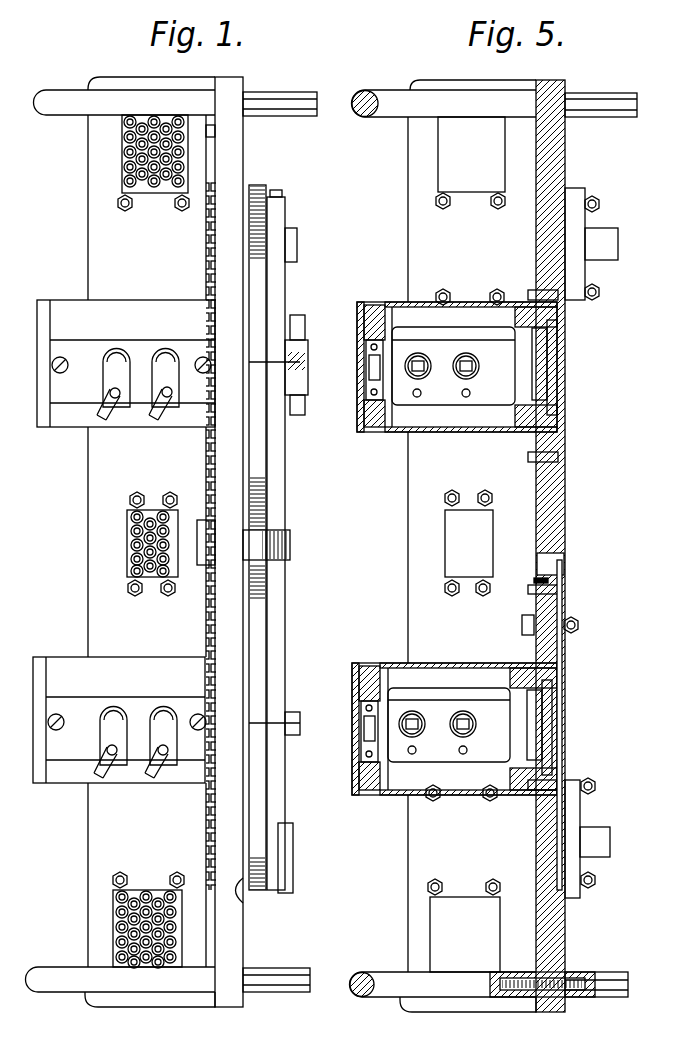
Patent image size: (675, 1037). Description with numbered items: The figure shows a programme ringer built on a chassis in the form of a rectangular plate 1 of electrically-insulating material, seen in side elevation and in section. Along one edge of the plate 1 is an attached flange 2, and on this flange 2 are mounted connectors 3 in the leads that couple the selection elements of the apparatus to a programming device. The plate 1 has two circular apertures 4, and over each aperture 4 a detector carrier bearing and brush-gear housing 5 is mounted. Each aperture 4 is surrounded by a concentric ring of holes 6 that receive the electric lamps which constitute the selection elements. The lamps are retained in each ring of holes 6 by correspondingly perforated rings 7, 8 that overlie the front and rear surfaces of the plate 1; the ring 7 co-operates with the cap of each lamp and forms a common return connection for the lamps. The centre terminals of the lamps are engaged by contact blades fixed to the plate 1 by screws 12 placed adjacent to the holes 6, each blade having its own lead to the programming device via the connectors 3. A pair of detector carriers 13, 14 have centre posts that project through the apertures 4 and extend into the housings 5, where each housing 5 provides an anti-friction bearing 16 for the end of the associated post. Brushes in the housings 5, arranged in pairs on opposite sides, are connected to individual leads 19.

In FIG. 1, the rectangular plate 1 is at (227, 967).
In FIG. 5, the rectangular plate 1 is at (552, 937).
In FIG. 1, the flange 2 is at (93, 861).
In FIG. 5, the flange 2 is at (407, 924).
In FIG. 1, the connectors 3 is at (122, 160).
In FIG. 5, the circular apertures 4 is at (552, 383).
In FIG. 5, the detector carrier bearing and brush-gear housings 5 is at (390, 428).
In FIG. 5, the holes 6 is at (558, 563).
In FIG. 5, the perforated ring 7 is at (535, 573).
In FIG. 1, the perforated ring 8 is at (235, 892).
In FIG. 5, the perforated ring 8 is at (563, 583).
In FIG. 1, the screws 12 is at (205, 641).
In FIG. 1, the detector carrier 13 is at (281, 285).
In FIG. 1, the detector carrier 14 is at (277, 652).
In FIG. 5, the anti-friction bearing 16 is at (365, 730).
In FIG. 1, the leads 19 is at (100, 414).